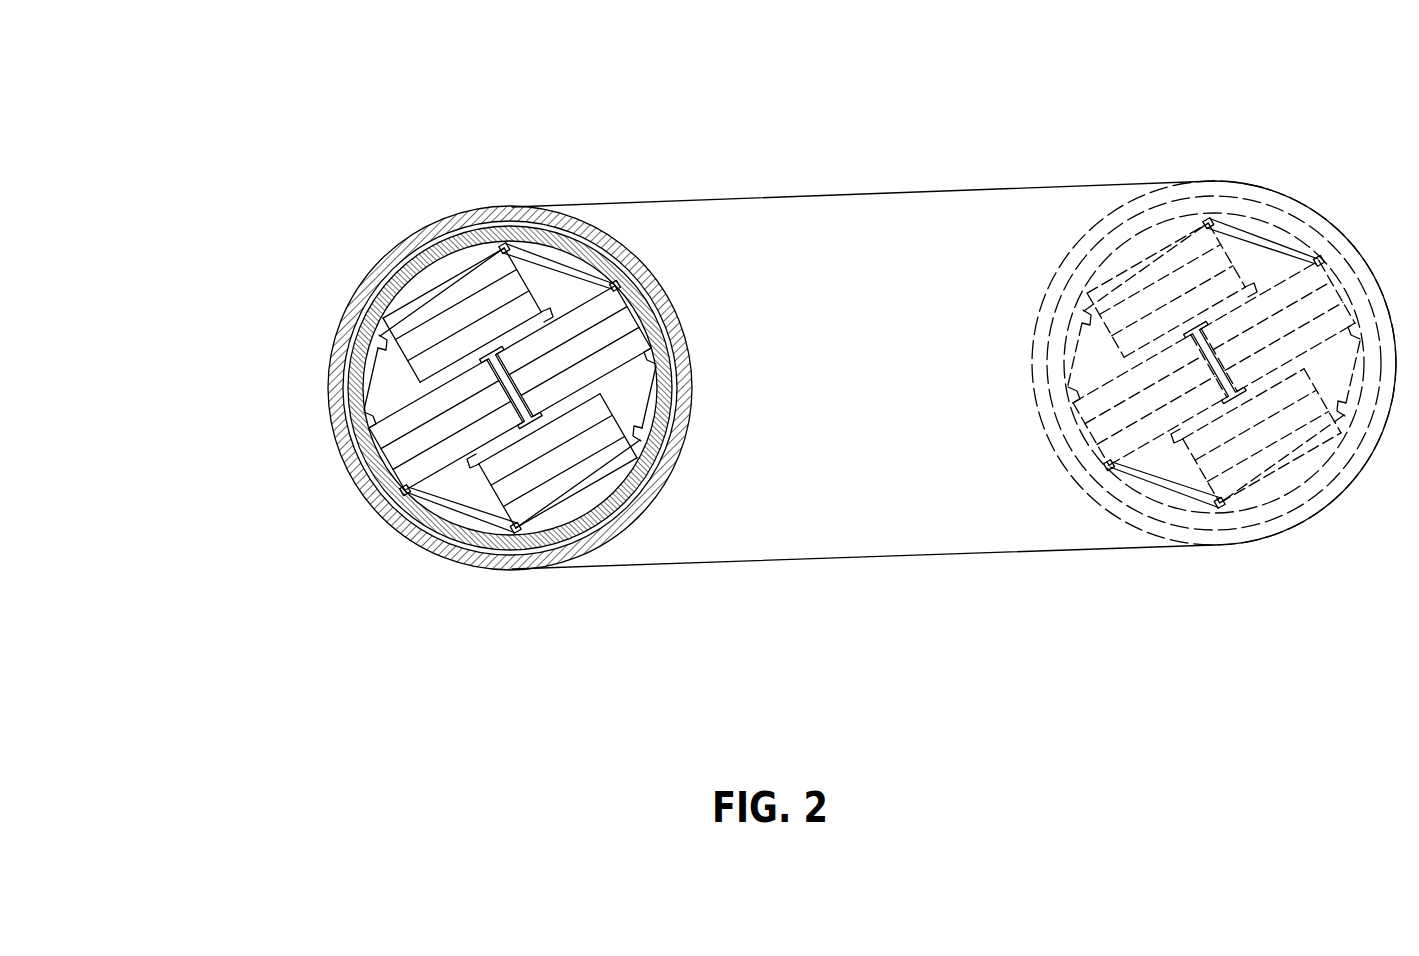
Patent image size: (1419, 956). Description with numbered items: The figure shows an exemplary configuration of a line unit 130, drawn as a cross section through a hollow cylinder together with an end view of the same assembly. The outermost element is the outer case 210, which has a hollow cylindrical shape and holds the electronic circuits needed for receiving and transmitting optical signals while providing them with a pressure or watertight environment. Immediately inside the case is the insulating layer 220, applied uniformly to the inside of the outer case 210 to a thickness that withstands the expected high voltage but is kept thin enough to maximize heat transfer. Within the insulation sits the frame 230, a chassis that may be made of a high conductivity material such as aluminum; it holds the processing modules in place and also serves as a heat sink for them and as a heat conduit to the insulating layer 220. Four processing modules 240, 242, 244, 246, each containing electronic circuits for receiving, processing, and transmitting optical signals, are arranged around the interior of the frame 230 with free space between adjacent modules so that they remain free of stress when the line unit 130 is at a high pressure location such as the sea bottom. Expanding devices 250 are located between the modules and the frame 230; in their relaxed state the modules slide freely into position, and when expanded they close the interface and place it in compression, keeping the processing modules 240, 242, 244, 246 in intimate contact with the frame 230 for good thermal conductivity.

The line unit 130 is at (338, 128).
The outer case 210 is at (479, 206).
The insulating layer 220 is at (674, 446).
The frame 230 is at (670, 361).
The processing module 240 is at (617, 326).
The processing module 242 is at (577, 470).
The processing module 244 is at (398, 455).
The processing module 246 is at (420, 310).
The expanding device 250 is at (611, 263).